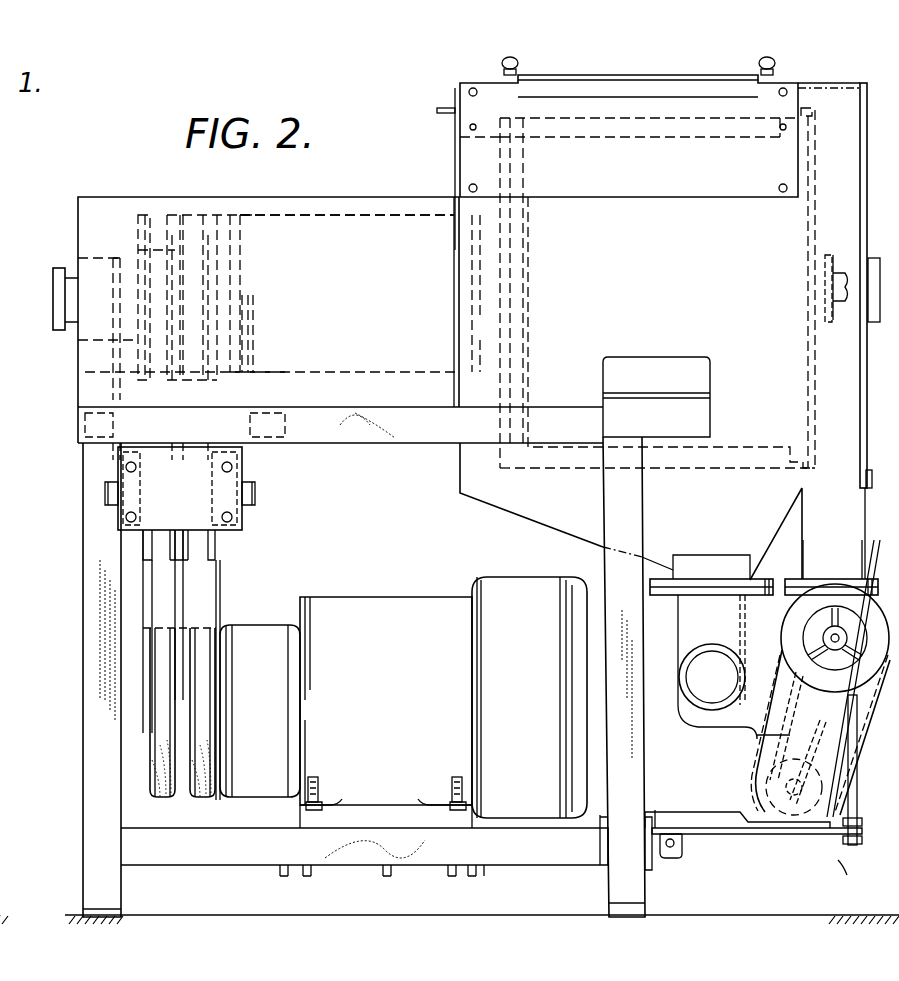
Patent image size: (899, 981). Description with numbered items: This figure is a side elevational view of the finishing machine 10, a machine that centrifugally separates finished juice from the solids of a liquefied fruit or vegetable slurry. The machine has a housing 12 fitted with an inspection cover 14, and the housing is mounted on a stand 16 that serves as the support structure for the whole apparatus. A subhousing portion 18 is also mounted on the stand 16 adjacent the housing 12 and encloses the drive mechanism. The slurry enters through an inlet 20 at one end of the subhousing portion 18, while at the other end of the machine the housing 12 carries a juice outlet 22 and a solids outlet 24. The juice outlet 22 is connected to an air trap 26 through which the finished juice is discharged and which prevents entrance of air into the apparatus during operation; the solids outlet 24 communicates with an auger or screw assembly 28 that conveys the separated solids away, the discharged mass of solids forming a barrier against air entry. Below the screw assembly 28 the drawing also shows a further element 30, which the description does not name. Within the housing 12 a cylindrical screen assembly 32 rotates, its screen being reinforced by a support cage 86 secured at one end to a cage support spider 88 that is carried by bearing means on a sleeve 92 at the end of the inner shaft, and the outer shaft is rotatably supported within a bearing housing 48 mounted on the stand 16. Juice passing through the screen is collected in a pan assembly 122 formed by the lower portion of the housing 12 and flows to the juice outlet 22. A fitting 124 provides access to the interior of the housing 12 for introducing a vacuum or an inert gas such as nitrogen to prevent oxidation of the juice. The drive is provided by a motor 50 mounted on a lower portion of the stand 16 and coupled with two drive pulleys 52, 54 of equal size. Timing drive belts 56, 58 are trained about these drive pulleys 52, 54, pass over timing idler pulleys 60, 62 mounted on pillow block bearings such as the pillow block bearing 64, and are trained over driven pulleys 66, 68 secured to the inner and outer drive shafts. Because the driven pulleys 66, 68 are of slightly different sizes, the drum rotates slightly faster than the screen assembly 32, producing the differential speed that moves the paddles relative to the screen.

The finishing machine 10 is at (818, 78).
The housing 12 is at (872, 188).
The inspection cover 14 is at (668, 76).
The stand 16 is at (648, 530).
The subhousing portion 18 is at (358, 196).
The inlet 20 is at (54, 328).
The juice outlet 22 is at (716, 578).
The solids outlet 24 is at (828, 578).
The air trap 26 is at (706, 664).
The auger or screw assembly 28 is at (833, 672).
The driven pulley 30 is at (742, 786).
The cylindrical screen assembly 32 is at (815, 165).
The bearing housing 48 is at (300, 214).
The motor 50 is at (405, 718).
The drive pulley 52 is at (150, 660).
The drive pulley 54 is at (217, 640).
The drive belt 56 is at (175, 576).
The drive belt 58 is at (190, 576).
The timing idler pulley 60 is at (143, 553).
The timing idler pulley 62 is at (208, 550).
The pillow block bearing 64 is at (238, 468).
The driven pulley 66 is at (138, 230).
The driven pulley 68 is at (212, 212).
The support cage 86 is at (562, 118).
The cage support spider 88 is at (816, 410).
The sleeve 92 is at (830, 260).
The pan assembly 122 is at (520, 524).
The fitting 124 is at (438, 106).